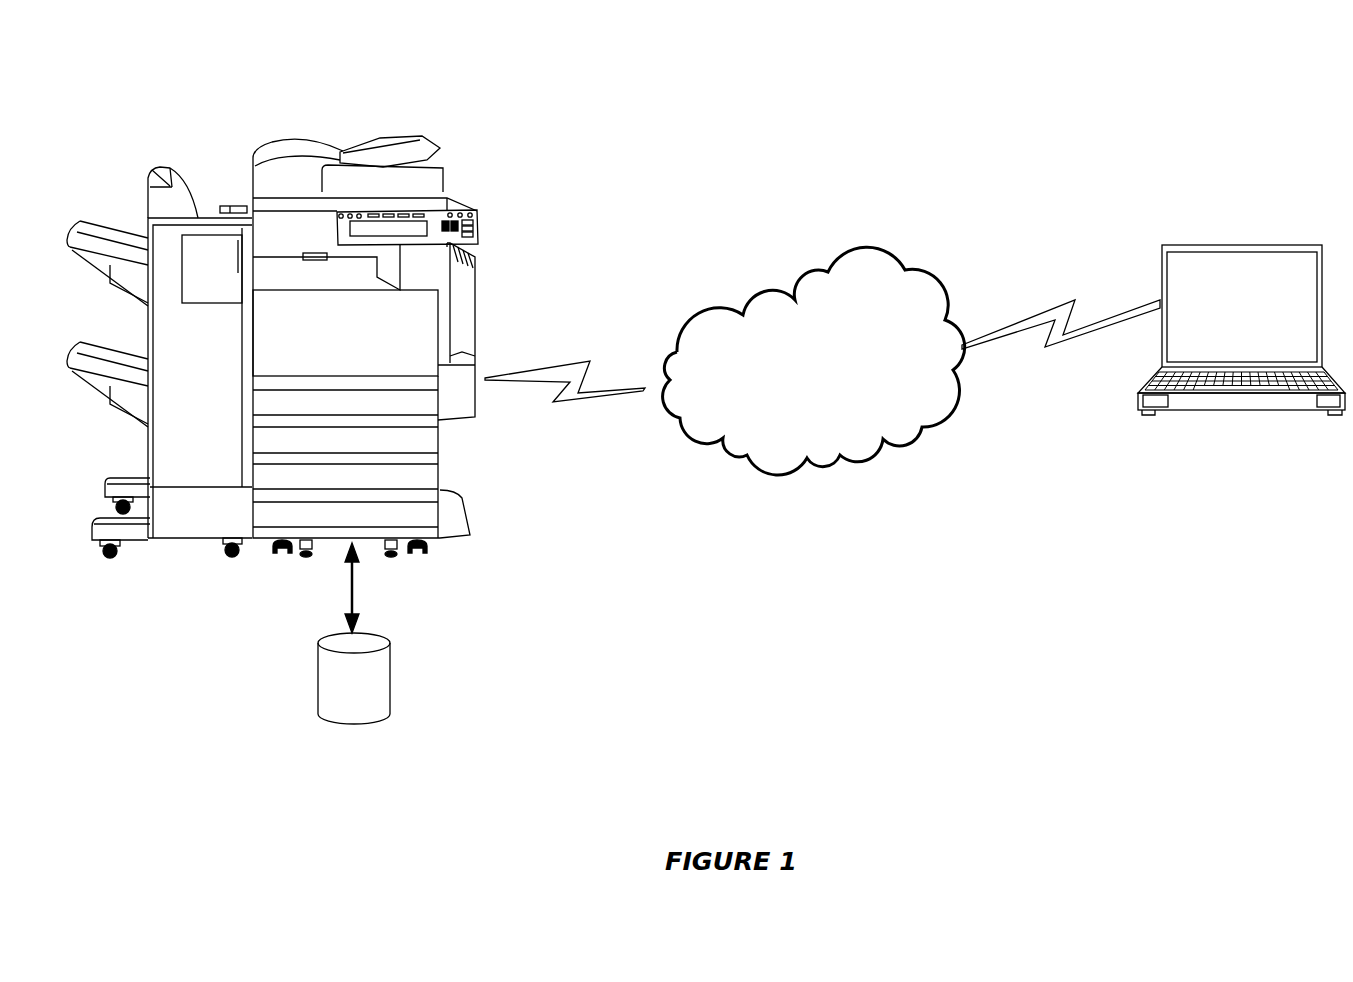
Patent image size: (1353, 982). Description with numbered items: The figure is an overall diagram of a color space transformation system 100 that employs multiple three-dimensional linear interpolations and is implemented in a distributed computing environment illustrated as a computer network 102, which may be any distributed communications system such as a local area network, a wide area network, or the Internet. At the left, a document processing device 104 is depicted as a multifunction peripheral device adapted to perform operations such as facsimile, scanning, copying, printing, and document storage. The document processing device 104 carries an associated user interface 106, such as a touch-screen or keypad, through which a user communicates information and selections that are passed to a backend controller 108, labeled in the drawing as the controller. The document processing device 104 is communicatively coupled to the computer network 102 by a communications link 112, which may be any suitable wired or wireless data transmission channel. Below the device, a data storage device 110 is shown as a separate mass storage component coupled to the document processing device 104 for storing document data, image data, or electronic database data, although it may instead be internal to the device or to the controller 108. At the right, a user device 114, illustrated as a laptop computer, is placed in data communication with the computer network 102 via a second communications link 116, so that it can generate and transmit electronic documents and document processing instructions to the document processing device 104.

The color space transformation system 100 is at (1012, 135).
The computer network 102 is at (888, 243).
The document processing device 104 is at (292, 140).
The user interface 106 is at (474, 222).
The controller 108 is at (438, 322).
The data storage device 110 is at (386, 641).
The communications link 112 is at (592, 360).
The user device 114 is at (1234, 244).
The communications link 116 is at (1078, 303).